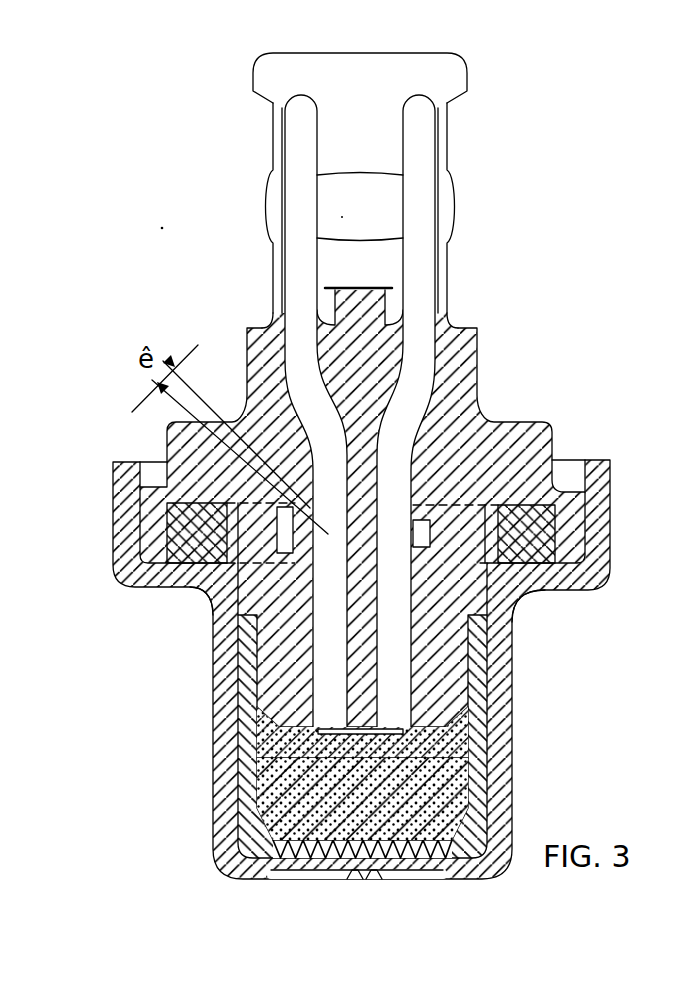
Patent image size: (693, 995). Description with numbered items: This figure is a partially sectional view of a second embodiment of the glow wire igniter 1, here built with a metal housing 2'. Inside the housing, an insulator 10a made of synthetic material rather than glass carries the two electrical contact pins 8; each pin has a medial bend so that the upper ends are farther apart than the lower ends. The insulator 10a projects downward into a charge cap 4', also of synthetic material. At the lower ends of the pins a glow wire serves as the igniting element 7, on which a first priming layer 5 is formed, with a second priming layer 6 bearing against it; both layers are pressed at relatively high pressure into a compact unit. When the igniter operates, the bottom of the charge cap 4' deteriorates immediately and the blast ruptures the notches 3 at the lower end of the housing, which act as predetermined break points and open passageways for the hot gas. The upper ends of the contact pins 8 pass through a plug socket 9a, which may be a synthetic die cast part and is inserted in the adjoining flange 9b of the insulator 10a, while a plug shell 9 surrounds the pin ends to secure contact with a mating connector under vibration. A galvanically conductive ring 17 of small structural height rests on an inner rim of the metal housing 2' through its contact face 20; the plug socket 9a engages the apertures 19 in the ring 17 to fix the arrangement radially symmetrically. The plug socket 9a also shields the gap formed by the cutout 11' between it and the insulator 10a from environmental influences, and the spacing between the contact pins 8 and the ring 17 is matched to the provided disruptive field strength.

The glow wire igniter 1 is at (477, 299).
The metal housing 2' is at (391, 669).
The notches 3 is at (332, 885).
The charge cap 4' is at (400, 736).
The first priming layer 5 is at (456, 742).
The second priming layer 6 is at (450, 792).
The igniting element 7 is at (382, 733).
The contact pins 8 is at (293, 133).
The plug shell 9 is at (450, 78).
The plug socket 9a is at (462, 345).
The flange 9b is at (213, 596).
The insulator 10a is at (273, 670).
The cutout 11' is at (420, 589).
The galvanically conductive ring 17 is at (556, 540).
The apertures 19 is at (478, 527).
The contact face 20 is at (543, 575).